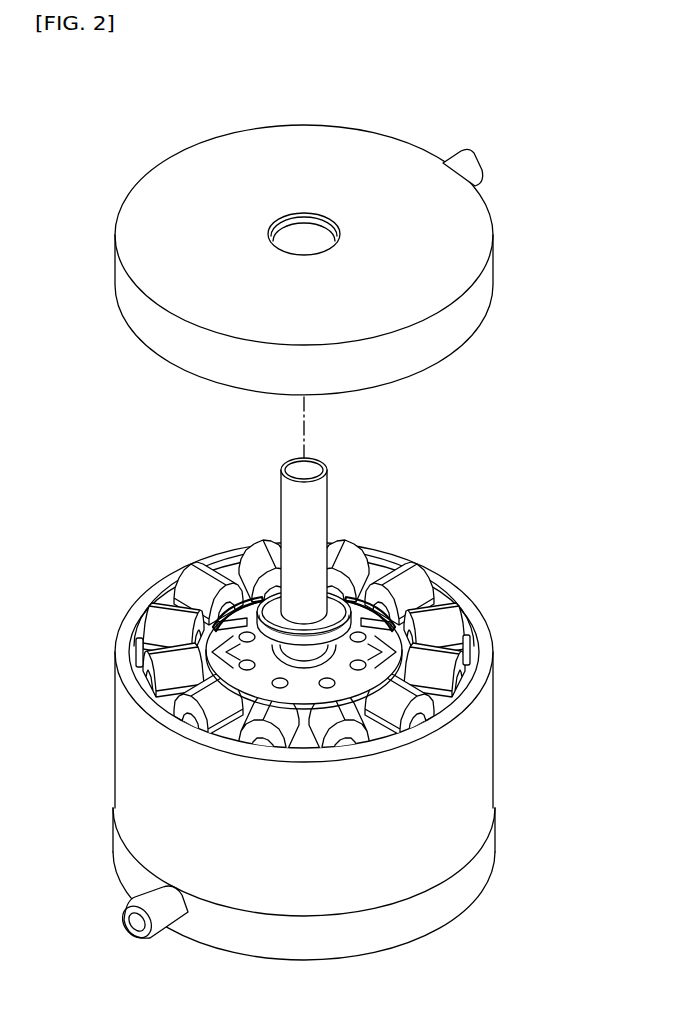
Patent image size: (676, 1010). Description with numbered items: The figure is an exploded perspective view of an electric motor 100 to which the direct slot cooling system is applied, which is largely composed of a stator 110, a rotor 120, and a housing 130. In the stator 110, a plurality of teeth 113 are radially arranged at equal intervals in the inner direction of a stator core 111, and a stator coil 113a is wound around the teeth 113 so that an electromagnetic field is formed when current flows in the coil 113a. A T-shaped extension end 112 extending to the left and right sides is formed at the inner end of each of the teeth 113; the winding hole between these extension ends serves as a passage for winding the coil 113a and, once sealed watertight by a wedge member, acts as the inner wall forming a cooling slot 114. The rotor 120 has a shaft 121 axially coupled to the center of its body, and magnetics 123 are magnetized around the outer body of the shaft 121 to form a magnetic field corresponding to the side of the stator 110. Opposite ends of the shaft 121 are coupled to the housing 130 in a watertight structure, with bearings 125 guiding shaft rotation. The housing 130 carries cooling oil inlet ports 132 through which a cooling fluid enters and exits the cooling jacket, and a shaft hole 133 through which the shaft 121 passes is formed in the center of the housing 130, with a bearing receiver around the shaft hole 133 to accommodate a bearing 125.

The motor 100 is at (320, 83).
The stator 110 is at (497, 749).
The stator core 111 is at (437, 580).
The T-shaped extension end 112 is at (360, 597).
The teeth 113 is at (347, 646).
The stator coil 113a is at (445, 612).
The cooling slot 114 is at (466, 648).
The rotor 120 is at (118, 460).
The shaft 121 is at (300, 517).
The magnetics 123 is at (258, 600).
The bearings 125 is at (267, 598).
The housing 130 is at (392, 113).
The cooling oil inlet ports 132 is at (473, 164).
The shaft hole 133 is at (302, 250).